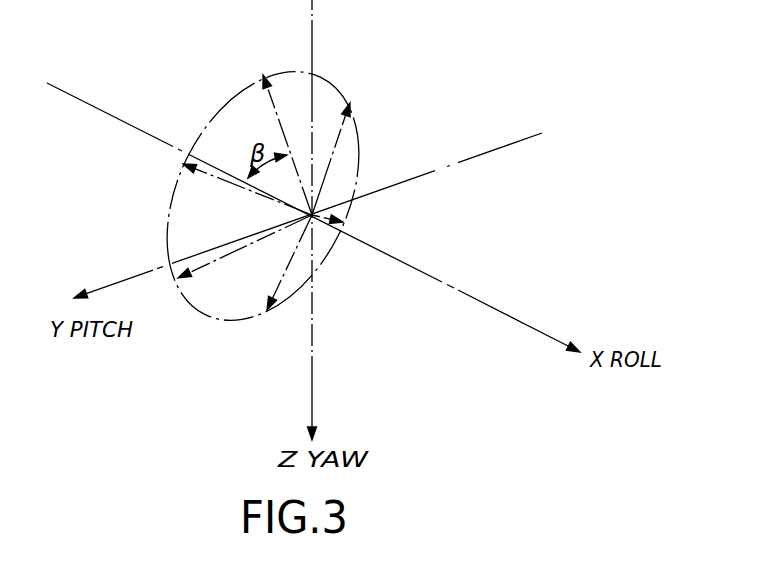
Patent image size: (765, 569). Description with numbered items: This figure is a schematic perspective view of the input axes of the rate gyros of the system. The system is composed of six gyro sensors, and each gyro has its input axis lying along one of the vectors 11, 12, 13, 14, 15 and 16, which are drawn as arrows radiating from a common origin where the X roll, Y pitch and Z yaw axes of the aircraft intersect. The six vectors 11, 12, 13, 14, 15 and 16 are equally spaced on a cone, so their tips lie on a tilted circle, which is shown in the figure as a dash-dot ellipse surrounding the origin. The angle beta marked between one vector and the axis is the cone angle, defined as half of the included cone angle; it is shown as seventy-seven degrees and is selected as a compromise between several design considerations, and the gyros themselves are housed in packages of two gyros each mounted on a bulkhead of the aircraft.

The vector 11 is at (280, 282).
The vector 12 is at (273, 133).
The vector 13 is at (343, 223).
The vector 14 is at (231, 185).
The vector 15 is at (226, 263).
The vector 16 is at (345, 150).